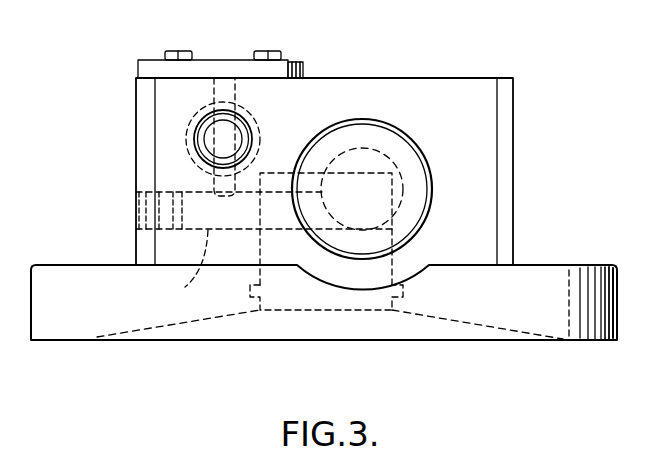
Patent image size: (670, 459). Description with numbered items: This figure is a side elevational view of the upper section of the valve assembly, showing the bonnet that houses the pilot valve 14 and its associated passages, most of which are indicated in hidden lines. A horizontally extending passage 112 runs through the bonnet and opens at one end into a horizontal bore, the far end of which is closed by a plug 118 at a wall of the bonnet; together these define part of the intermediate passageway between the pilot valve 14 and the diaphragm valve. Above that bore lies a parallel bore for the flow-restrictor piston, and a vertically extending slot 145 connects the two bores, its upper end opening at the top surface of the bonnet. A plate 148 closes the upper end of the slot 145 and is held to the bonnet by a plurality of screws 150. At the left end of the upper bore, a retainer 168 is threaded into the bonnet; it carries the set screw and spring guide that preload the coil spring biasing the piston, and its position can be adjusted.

The pilot valve 14 is at (430, 156).
The horizontally extending passage 112 is at (172, 266).
The plug 118 is at (148, 215).
The vertically extending slot 145 is at (236, 90).
The plate 148 is at (304, 61).
The screws 150 is at (192, 52).
The retainer 168 is at (192, 134).